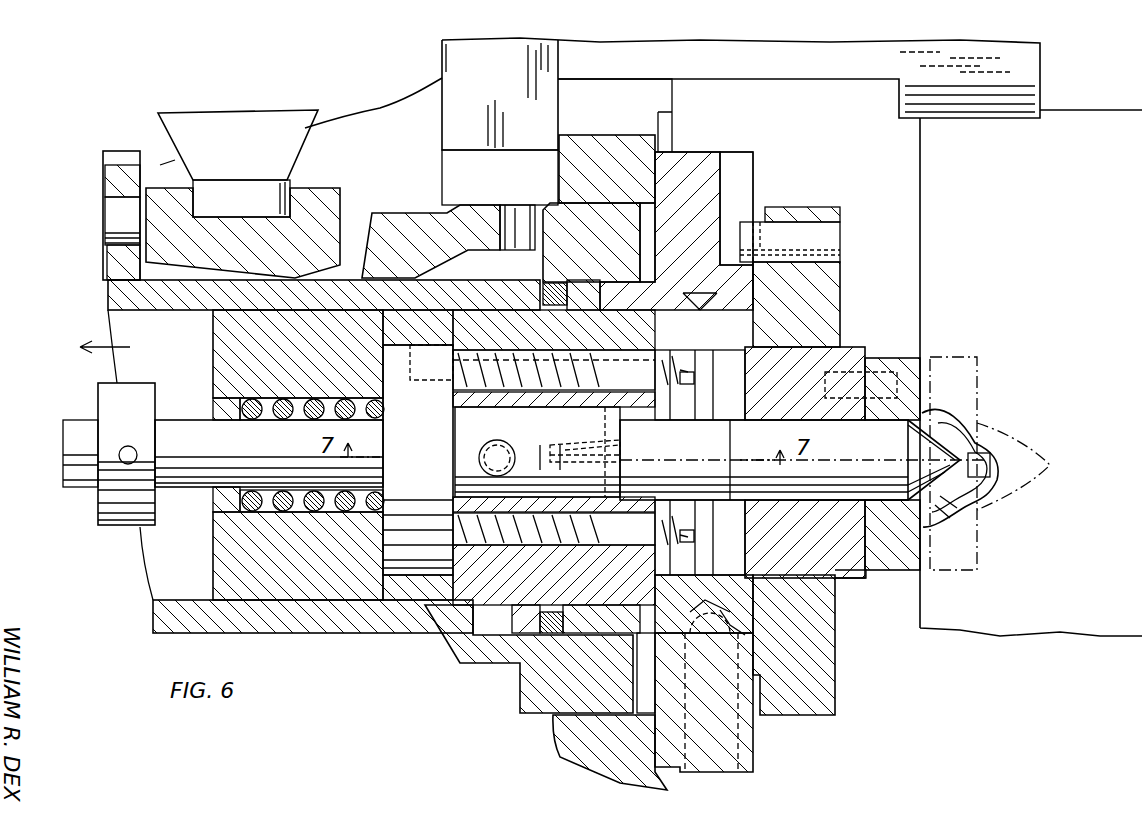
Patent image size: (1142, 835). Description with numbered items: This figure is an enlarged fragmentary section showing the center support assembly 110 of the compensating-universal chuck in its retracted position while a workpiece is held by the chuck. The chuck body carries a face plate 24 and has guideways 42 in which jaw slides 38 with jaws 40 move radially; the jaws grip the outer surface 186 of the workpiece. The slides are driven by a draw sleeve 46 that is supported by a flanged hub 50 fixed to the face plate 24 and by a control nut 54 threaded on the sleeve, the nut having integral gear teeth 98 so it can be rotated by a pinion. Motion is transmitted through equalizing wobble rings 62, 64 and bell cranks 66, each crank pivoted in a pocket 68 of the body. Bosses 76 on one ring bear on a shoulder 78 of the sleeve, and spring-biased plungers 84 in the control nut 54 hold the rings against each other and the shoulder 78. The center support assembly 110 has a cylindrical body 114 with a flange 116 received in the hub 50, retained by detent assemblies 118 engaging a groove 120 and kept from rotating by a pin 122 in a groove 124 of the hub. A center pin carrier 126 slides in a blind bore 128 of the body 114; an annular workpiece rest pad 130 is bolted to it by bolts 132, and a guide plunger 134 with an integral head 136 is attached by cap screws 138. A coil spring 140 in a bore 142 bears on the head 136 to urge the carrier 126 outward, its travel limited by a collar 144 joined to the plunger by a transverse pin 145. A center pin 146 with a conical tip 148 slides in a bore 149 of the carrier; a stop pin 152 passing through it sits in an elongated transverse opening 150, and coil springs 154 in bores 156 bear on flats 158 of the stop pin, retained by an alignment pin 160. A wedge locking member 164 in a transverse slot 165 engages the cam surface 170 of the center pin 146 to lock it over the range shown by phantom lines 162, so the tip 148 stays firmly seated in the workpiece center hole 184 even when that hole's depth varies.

The face plate 24 is at (600, 770).
The jaw slide 38 is at (455, 48).
The jaw 40 is at (1043, 62).
The guideway 42 is at (455, 160).
The draw sleeve 46 is at (305, 635).
The flanged hub 50 is at (755, 765).
The control nut 54 is at (110, 176).
The wobble ring 62 is at (418, 200).
The wobble ring 64 is at (340, 200).
The bell crank 66 is at (218, 128).
The pocket 68 is at (383, 115).
The boss 76 is at (532, 205).
The shoulder 78 is at (520, 700).
The plunger 84 is at (115, 212).
The gear teeth 98 is at (120, 152).
The center support assembly 110 is at (884, 683).
The body 114 is at (213, 338).
The flange 116 is at (818, 712).
The detent assembly 118 is at (745, 638).
The groove 120 is at (720, 296).
The pin 122 is at (835, 240).
The groove 124 is at (752, 168).
The center pin carrier 126 is at (858, 580).
The blind bore 128 is at (745, 590).
The workpiece rest pad 130 is at (905, 358).
The bolt 132 is at (872, 358).
The guide plunger 134 is at (182, 420).
The head 136 is at (415, 348).
The cap screw 138 is at (410, 368).
The coil spring 140 is at (298, 378).
The bore 142 is at (320, 505).
The collar 144 is at (120, 512).
The transverse pin 145 is at (122, 447).
The center pin 146 is at (760, 478).
The conical tip 148 is at (920, 428).
The bore 149 is at (800, 502).
The transverse opening 150 is at (758, 553).
The stop pin 152 is at (745, 392).
The coil spring 154 is at (505, 545).
The bore 156 is at (572, 545).
The flat 158 is at (718, 575).
The alignment pin 160 is at (672, 535).
The phantom lines 162 is at (950, 490).
The wedge locking member 164 is at (537, 452).
The slot 165 is at (522, 410).
The cam surface 170 is at (645, 452).
The center hole 184 is at (955, 437).
The outer surface 186 is at (1064, 118).